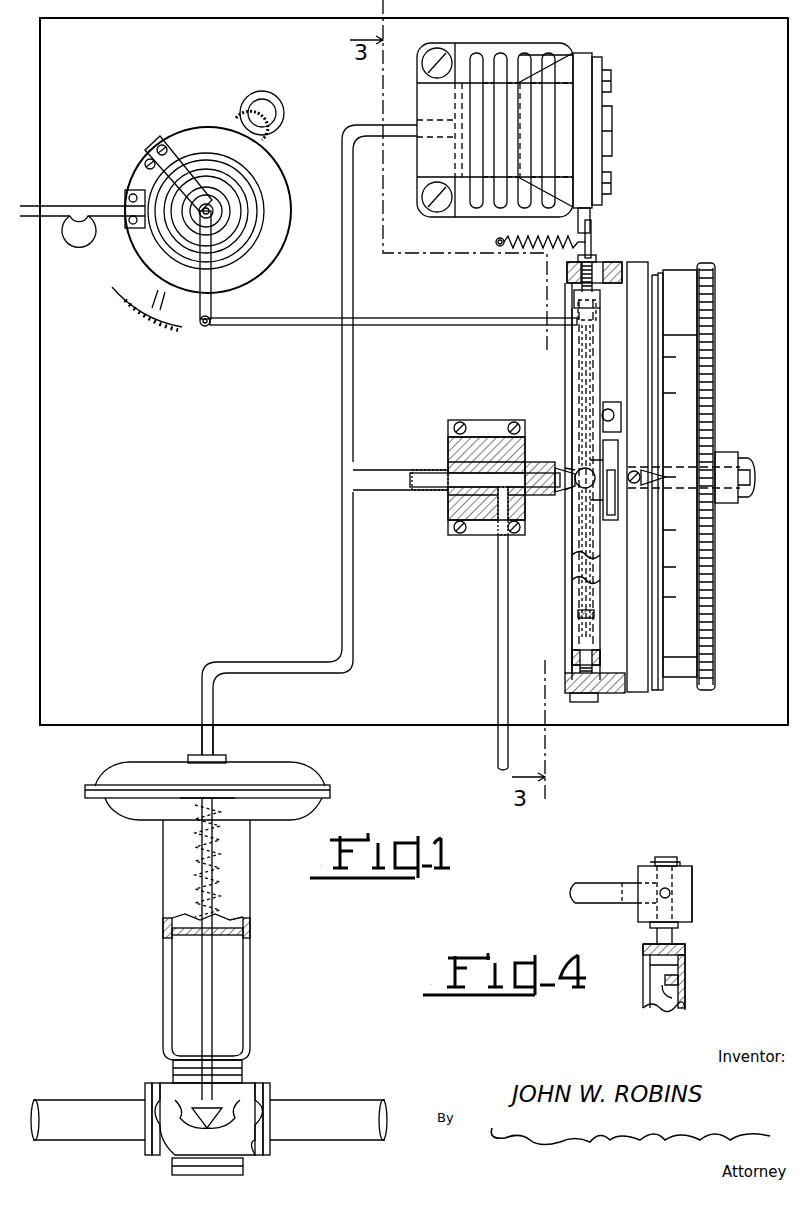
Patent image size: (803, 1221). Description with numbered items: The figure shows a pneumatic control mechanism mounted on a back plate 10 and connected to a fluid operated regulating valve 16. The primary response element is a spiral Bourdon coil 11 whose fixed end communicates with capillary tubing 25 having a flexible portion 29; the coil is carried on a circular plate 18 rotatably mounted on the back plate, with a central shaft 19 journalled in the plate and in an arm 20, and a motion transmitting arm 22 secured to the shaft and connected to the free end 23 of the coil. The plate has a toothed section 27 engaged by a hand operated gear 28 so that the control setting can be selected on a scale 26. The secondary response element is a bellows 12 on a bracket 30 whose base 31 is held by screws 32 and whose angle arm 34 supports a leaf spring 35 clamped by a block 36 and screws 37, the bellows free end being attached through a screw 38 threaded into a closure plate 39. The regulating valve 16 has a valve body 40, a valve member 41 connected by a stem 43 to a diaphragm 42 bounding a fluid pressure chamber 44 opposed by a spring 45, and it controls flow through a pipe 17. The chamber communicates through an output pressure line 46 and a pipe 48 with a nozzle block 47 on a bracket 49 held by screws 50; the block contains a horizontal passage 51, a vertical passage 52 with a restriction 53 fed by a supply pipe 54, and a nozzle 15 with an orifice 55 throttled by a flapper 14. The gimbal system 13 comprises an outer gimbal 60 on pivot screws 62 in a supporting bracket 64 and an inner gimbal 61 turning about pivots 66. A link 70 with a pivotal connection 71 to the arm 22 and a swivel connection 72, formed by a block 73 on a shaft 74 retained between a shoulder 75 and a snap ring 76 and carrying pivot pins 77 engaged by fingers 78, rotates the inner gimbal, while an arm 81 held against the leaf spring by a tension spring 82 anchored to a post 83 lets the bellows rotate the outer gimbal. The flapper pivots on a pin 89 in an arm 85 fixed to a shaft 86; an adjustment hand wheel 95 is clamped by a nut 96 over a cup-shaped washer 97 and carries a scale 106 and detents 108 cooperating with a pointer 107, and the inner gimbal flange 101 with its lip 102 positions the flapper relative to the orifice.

In FIG. 1, the back plate 10 is at (393, 727).
In FIG. 1, the spiral Bourdon coil 11 is at (252, 254).
In FIG. 1, the bellows 12 is at (494, 63).
In FIG. 1, the gimbal system 13 is at (560, 402).
In FIG. 1, the flapper 14 is at (578, 387).
In FIG. 1, the nozzle 15 is at (556, 457).
In FIG. 1, the regulating valve 16 is at (155, 897).
In FIG. 1, the pipe 17 is at (330, 1100).
In FIG. 1, the circular plate 18 is at (186, 128).
In FIG. 1, the central shaft 19 is at (230, 198).
In FIG. 1, the arm 20 is at (168, 164).
In FIG. 1, the motion transmitting arm 22 is at (203, 306).
In FIG. 1, the free end of the coil 23 is at (236, 228).
In FIG. 1, the capillary tubing 25 is at (100, 205).
In FIG. 1, the scale 26 is at (128, 305).
In FIG. 1, the toothed section 27 is at (229, 120).
In FIG. 1, the hand operated gear 28 is at (263, 91).
In FIG. 1, the flexible portion 29 is at (70, 246).
In FIG. 1, the bracket 30 is at (434, 160).
In FIG. 1, the base 31 is at (466, 47).
In FIG. 1, the screws 32 is at (424, 60).
In FIG. 1, the angle arm 34 is at (446, 107).
In FIG. 1, the leaf spring 35 is at (596, 148).
In FIG. 1, the block 36 is at (593, 62).
In FIG. 1, the screws 37 is at (609, 82).
In FIG. 1, the screw 38 is at (608, 125).
In FIG. 1, the closure plate 39 is at (565, 82).
In FIG. 1, the valve body 40 is at (178, 1094).
In FIG. 1, the valve member 41 is at (204, 1122).
In FIG. 1, the diaphragm 42 is at (136, 806).
In FIG. 1, the stem 43 is at (206, 985).
In FIG. 1, the fluid pressure chamber 44 is at (121, 770).
In FIG. 1, the spring 45 is at (222, 902).
In FIG. 1, the output pressure line 46 is at (350, 130).
In FIG. 1, the nozzle block 47 is at (448, 459).
In FIG. 1, the pipe 48 is at (410, 488).
In FIG. 1, the bracket 49 is at (488, 420).
In FIG. 1, the screws 50 is at (460, 422).
In FIG. 1, the horizontal passage 51 is at (468, 500).
In FIG. 1, the vertical passage 52 is at (502, 482).
In FIG. 1, the restriction 53 is at (481, 528).
In FIG. 1, the pipe 54 is at (497, 632).
In FIG. 1, the orifice 55 is at (576, 486).
In FIG. 1, the outer gimbal 60 is at (604, 292).
In FIG. 1, the inner gimbal 61 is at (599, 348).
In FIG. 4, the inner gimbal 61 is at (665, 1009).
In FIG. 1, the pivot screws 62 is at (580, 260).
In FIG. 1, the supporting bracket 64 is at (636, 693).
In FIG. 1, the pivots 66 is at (590, 478).
In FIG. 1, the link 70 is at (305, 327).
In FIG. 4, the link 70 is at (598, 883).
In FIG. 1, the pivotal connection 71 is at (208, 327).
In FIG. 1, the swivel connection 72 is at (574, 304).
In FIG. 4, the swivel connection 72 is at (703, 865).
In FIG. 4, the block 73 is at (693, 882).
In FIG. 1, the shaft 74 is at (586, 306).
In FIG. 4, the shaft 74 is at (666, 857).
In FIG. 4, the shoulder 75 is at (681, 926).
In FIG. 4, the snap ring 76 is at (677, 862).
In FIG. 4, the pivot pins 77 is at (671, 893).
In FIG. 4, the fingers 78 is at (645, 880).
In FIG. 1, the arm 81 is at (592, 240).
In FIG. 1, the tension spring 82 is at (572, 245).
In FIG. 1, the post 83 is at (497, 242).
In FIG. 1, the arm 85 is at (615, 506).
In FIG. 1, the shaft 86 is at (750, 480).
In FIG. 1, the pin 89 is at (606, 420).
In FIG. 1, the adjustment hand wheel 95 is at (686, 278).
In FIG. 1, the nut 96 is at (741, 460).
In FIG. 1, the cup-shaped washer 97 is at (641, 470).
In FIG. 1, the flange 101 is at (593, 619).
In FIG. 4, the flange 101 is at (685, 968).
In FIG. 1, the lip 102 is at (580, 614).
In FIG. 4, the lip 102 is at (674, 990).
In FIG. 1, the scale 106 is at (706, 387).
In FIG. 1, the pointer 107 is at (662, 480).
In FIG. 1, the detents 108 is at (660, 336).